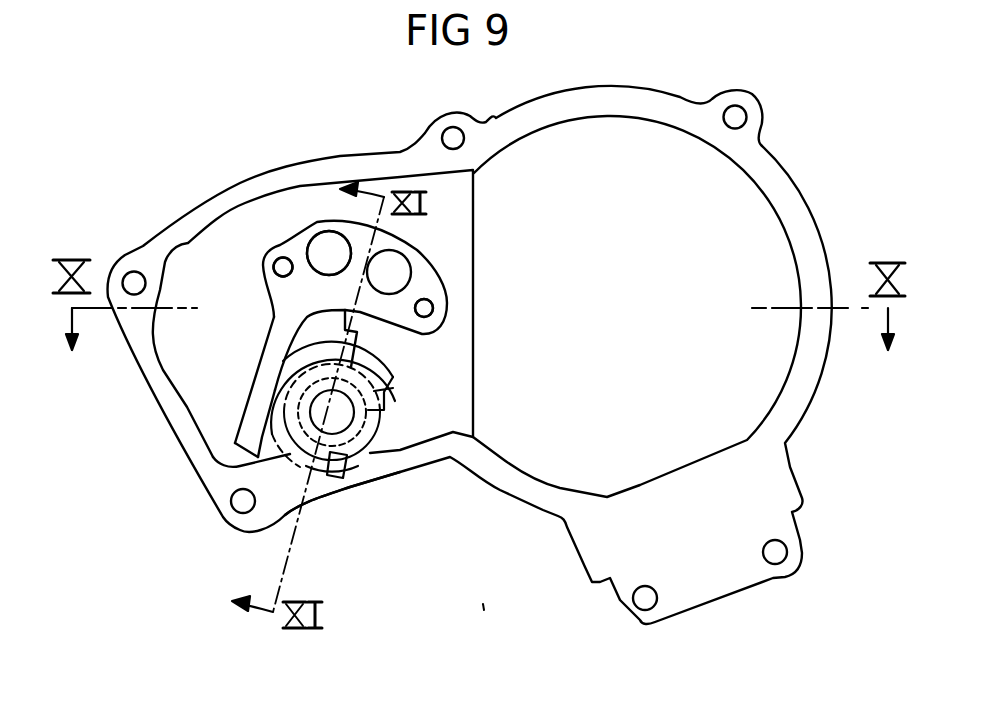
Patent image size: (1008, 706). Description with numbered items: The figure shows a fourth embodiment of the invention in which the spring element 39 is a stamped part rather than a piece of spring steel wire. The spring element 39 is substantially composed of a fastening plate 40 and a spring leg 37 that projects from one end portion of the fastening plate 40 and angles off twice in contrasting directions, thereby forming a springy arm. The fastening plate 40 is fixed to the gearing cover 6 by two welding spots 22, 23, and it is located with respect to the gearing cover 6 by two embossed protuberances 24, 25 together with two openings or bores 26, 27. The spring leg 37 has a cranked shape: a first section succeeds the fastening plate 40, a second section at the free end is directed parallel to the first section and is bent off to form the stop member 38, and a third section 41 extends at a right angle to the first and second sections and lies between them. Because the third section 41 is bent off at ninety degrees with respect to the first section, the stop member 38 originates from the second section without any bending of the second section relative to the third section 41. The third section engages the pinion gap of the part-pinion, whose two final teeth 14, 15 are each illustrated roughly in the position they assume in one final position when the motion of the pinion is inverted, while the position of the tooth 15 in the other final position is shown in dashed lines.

The gearing cover 6 is at (152, 368).
The final tooth 14 is at (318, 448).
The final tooth 15 is at (363, 477).
The welding spot 22 is at (300, 243).
The welding spot 23 is at (402, 270).
The embossed protuberance 24 is at (278, 263).
The embossed protuberance 25 is at (425, 306).
The opening or bore 26 is at (278, 267).
The opening or bore 27 is at (432, 310).
The spring leg 37 is at (252, 398).
The stop member 38 is at (290, 507).
The spring element 39 is at (256, 325).
The fastening plate 40 is at (327, 246).
The third section 41 is at (262, 458).